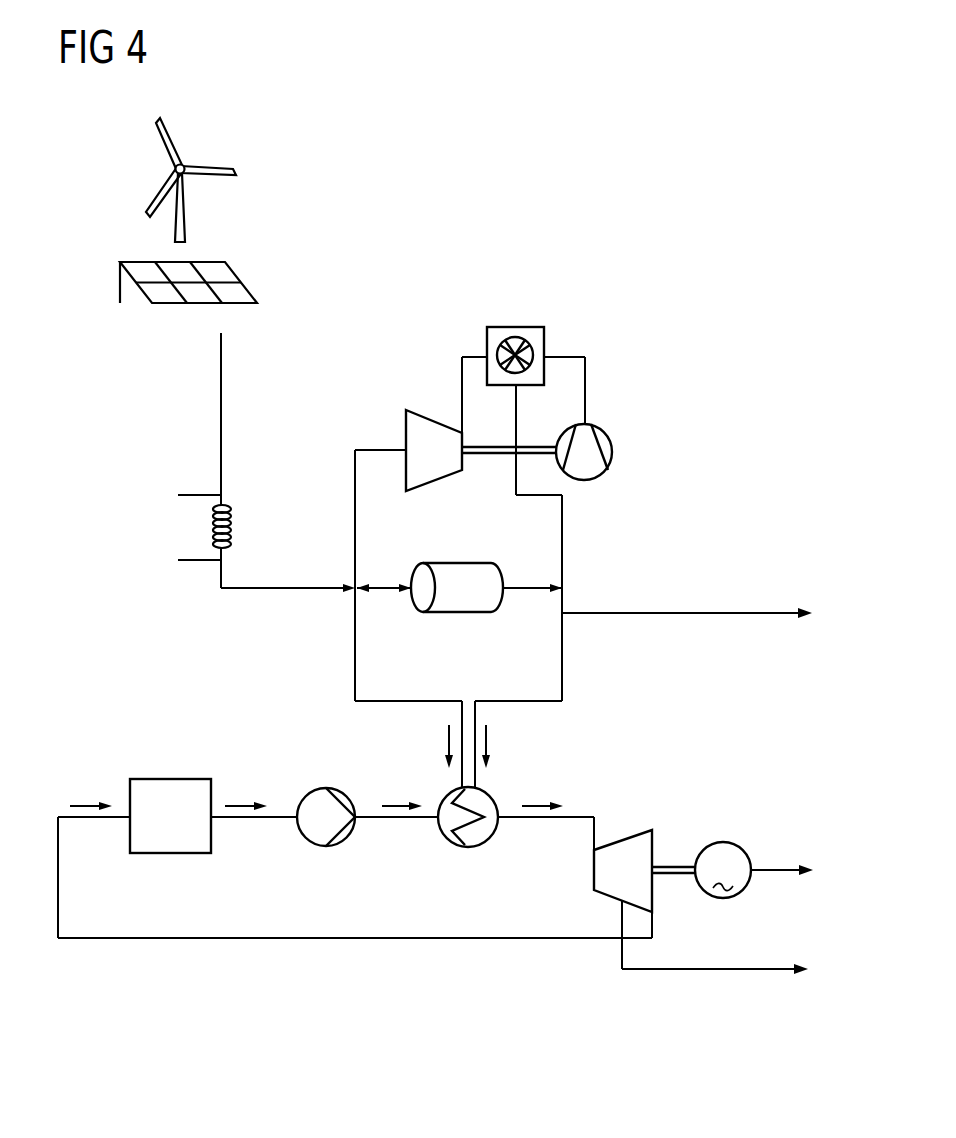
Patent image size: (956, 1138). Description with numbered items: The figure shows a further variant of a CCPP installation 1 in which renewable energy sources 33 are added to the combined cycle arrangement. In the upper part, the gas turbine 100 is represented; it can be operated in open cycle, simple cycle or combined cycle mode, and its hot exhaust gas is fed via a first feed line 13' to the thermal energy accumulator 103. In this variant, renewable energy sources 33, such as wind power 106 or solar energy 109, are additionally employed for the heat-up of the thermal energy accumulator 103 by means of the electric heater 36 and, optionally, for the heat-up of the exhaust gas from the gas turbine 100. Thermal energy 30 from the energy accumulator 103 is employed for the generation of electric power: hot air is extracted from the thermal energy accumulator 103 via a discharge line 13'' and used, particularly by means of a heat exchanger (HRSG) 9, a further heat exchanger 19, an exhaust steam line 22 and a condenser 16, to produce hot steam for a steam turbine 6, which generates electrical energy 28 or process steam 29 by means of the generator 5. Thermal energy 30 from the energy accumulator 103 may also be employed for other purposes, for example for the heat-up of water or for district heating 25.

The CCPP installation 1 is at (548, 128).
The renewable energy sources 33 is at (285, 229).
The wind power 106 is at (218, 162).
The solar energy 109 is at (250, 289).
The electric heater 36 is at (212, 528).
The gas turbine 100 is at (600, 325).
The first feed line 13' is at (313, 519).
The discharge line 13'' is at (311, 644).
The thermal energy accumulator 103 is at (467, 598).
The district heating 25 is at (678, 612).
The thermal energy 30 is at (400, 745).
The condenser 16 is at (170, 779).
The heat exchanger 19 is at (343, 847).
The heat exchanger (HRSG) 9 is at (487, 845).
The steam turbine 6 is at (623, 840).
The generator 5 is at (722, 842).
The electrical energy 28 is at (773, 867).
The exhaust steam line 22 is at (398, 940).
The process steam 29 is at (773, 971).